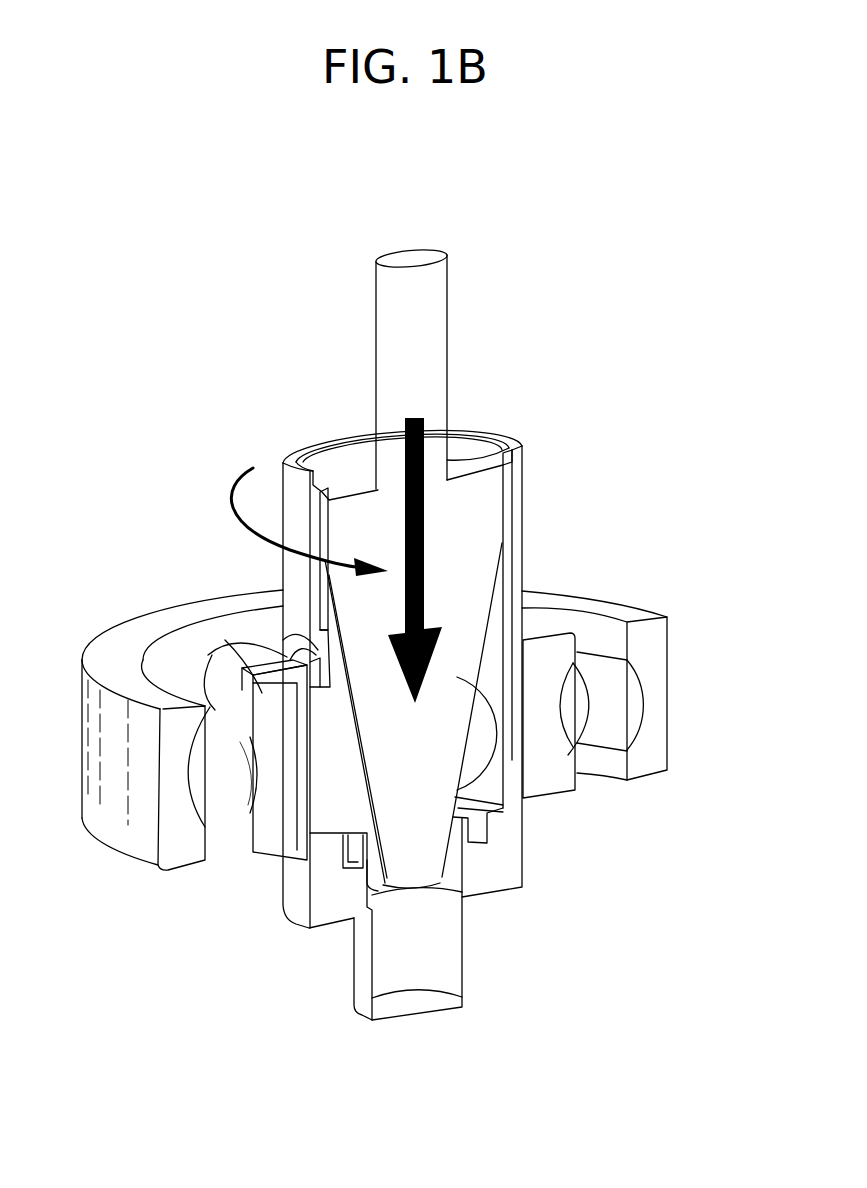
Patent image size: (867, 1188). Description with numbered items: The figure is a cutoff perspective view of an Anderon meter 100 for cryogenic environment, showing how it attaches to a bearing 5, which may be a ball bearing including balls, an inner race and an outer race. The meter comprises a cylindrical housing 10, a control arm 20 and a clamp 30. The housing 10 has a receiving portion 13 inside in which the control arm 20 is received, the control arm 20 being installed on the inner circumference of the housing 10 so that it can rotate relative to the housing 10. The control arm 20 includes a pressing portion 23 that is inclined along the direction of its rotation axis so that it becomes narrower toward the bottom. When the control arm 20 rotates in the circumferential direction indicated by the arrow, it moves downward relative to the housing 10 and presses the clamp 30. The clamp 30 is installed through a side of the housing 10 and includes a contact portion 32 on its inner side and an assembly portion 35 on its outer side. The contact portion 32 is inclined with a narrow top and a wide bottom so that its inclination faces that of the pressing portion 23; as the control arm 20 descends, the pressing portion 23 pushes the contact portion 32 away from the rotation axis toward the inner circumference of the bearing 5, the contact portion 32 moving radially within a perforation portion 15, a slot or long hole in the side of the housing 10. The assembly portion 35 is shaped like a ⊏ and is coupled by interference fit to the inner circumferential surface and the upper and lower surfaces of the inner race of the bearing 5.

The Anderon meter 100 is at (530, 250).
The control arm 20 is at (432, 312).
The housing 10 is at (292, 462).
The receiving portion 13 is at (312, 662).
The perforation portion 15 is at (283, 613).
The pressing portion 23 is at (390, 812).
The bearing 5 is at (128, 640).
The assembly portion 35 is at (252, 862).
The clamp 30 is at (122, 925).
The contact portion 32 is at (317, 820).